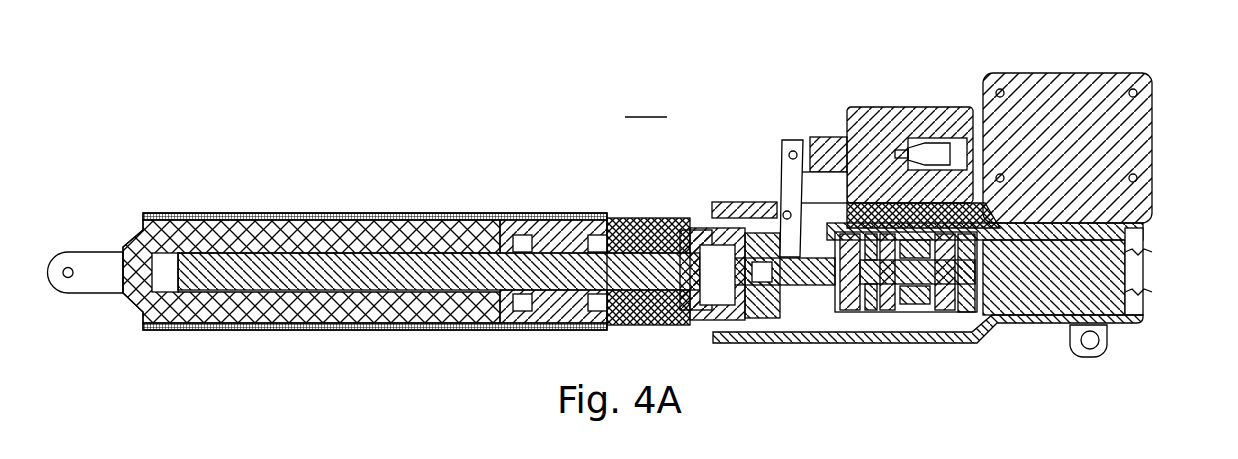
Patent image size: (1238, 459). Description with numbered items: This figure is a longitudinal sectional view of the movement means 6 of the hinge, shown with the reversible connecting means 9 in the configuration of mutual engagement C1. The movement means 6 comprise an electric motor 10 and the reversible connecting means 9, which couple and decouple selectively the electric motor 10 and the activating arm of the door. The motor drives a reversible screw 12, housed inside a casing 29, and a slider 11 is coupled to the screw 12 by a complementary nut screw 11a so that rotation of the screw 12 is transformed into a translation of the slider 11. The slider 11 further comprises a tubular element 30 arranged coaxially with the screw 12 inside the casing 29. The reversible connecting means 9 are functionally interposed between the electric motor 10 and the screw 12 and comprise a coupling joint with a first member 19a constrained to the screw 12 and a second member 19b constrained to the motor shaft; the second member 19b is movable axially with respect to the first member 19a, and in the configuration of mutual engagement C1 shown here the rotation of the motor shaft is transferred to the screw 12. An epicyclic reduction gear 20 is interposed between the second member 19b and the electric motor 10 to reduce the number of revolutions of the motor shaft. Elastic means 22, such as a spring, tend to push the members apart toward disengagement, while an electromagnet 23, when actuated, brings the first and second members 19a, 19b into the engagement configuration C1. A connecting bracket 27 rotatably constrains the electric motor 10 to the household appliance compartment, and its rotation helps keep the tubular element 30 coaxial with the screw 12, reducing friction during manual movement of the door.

The movement means 6 is at (265, 85).
The reversible connecting means 9 is at (557, 107).
The electric motor 10 is at (1043, 311).
The slider 11 is at (434, 206).
The nut screw 11a is at (551, 240).
The screw 12 is at (268, 268).
The first member 19a is at (700, 240).
The second member 19b is at (735, 247).
The epicyclic reduction gear 20 is at (916, 331).
The elastic means 22 is at (827, 122).
The electromagnet 23 is at (882, 97).
The connecting bracket 27 is at (1105, 340).
The casing 29 is at (343, 215).
The tubular element 30 is at (190, 230).
The configuration of mutual engagement C1 is at (646, 105).